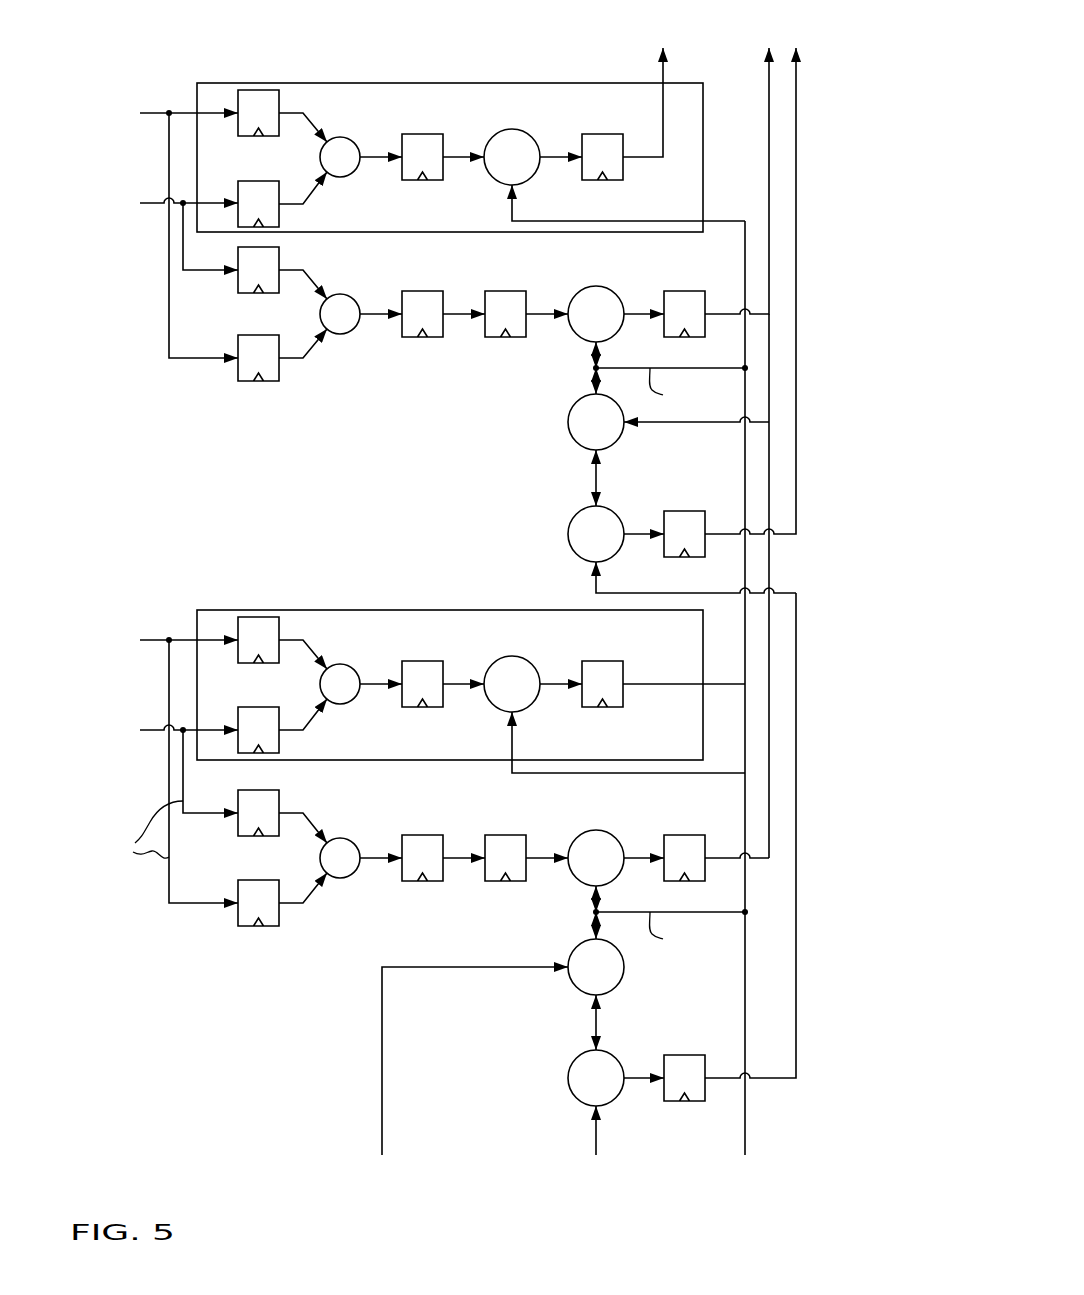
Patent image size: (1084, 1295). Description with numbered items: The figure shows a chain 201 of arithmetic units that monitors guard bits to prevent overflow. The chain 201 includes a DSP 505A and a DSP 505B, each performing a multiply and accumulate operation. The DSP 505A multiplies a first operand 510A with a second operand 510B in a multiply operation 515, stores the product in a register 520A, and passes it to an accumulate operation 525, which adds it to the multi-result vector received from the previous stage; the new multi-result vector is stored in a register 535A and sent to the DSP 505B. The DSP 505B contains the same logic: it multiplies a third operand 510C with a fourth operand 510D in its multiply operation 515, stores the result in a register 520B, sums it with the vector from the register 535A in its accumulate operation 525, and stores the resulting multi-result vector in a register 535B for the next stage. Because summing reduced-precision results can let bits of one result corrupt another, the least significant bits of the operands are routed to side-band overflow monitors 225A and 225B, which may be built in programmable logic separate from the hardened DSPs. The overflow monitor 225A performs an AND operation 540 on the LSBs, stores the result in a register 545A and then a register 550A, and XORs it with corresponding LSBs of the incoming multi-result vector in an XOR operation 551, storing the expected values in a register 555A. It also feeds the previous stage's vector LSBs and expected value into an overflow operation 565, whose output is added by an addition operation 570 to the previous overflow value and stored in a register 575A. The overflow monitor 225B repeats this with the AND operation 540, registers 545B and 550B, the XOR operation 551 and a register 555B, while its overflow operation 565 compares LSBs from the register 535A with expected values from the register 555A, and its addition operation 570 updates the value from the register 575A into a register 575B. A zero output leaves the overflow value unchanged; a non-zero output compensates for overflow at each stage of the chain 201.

The chain 201 is at (201, 51).
The DSP 505B is at (303, 83).
The DSP 505A is at (303, 610).
The fourth operand 510D is at (142, 227).
The third operand 510C is at (142, 228).
The second operand 510B is at (142, 764).
The first operand 510A is at (142, 764).
The multiply operation 515 is at (346, 138).
The register 520B is at (423, 134).
The register 520A is at (423, 661).
The accumulate operation 525 is at (521, 130).
The register 535B is at (603, 134).
The register 535A is at (603, 661).
The AND operation 540 is at (346, 295).
The register 545B is at (423, 291).
The register 545A is at (423, 835).
The register 550B is at (506, 291).
The register 550A is at (506, 835).
The XOR operation 551 is at (604, 287).
The register 555B is at (685, 291).
The register 555A is at (685, 835).
The overflow operation 565 is at (570, 415).
The addition operation 570 is at (570, 527).
The register 575B is at (685, 511).
The register 575A is at (685, 1055).
The overflow monitor 225B is at (810, 534).
The overflow monitor 225A is at (810, 1078).